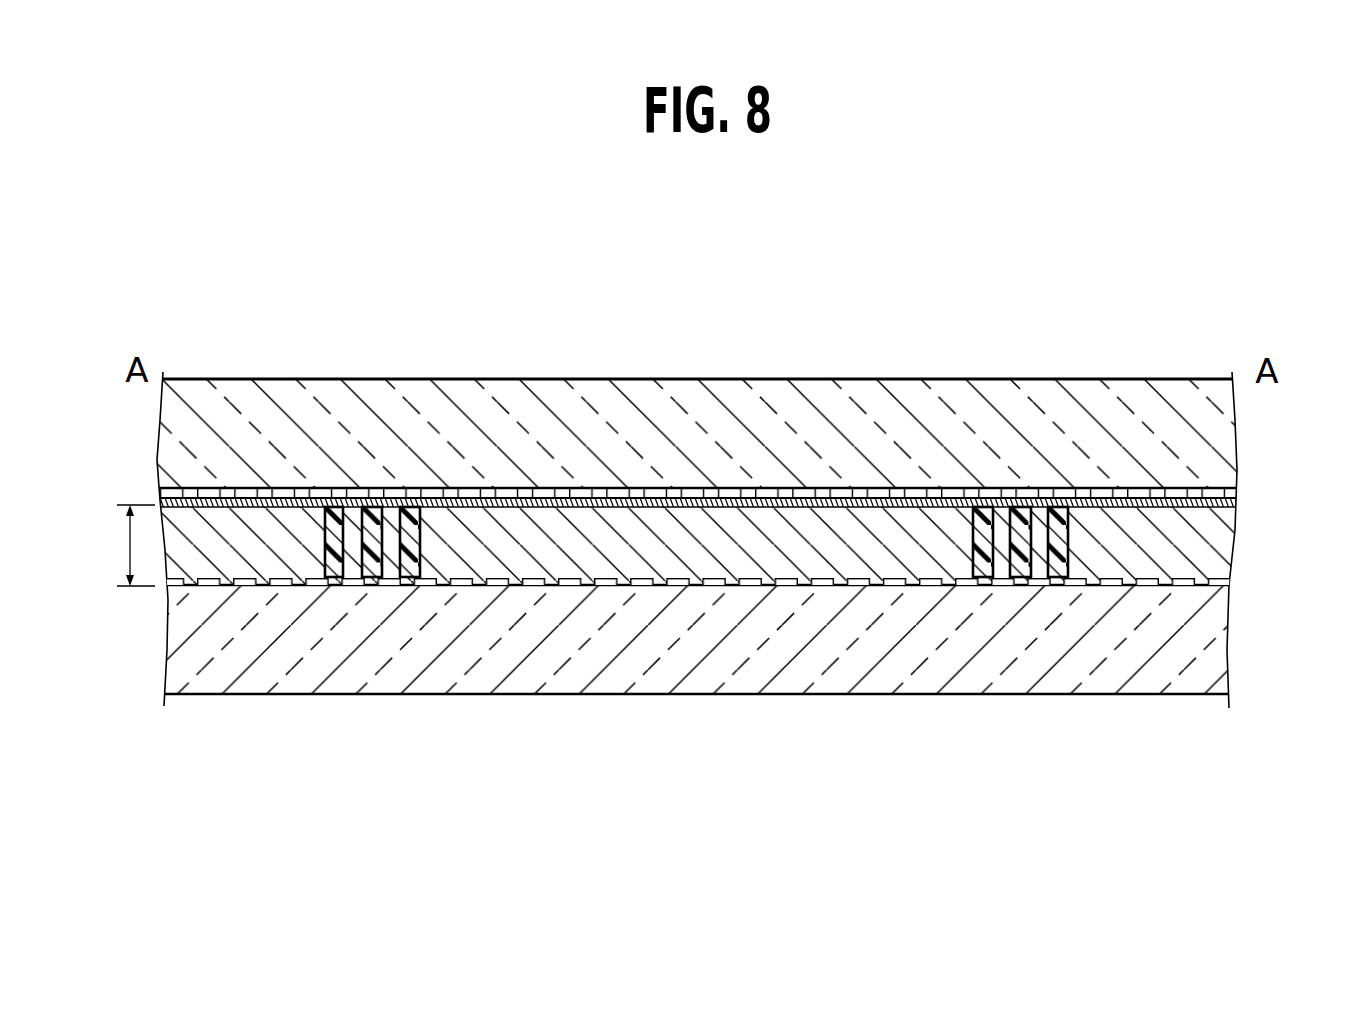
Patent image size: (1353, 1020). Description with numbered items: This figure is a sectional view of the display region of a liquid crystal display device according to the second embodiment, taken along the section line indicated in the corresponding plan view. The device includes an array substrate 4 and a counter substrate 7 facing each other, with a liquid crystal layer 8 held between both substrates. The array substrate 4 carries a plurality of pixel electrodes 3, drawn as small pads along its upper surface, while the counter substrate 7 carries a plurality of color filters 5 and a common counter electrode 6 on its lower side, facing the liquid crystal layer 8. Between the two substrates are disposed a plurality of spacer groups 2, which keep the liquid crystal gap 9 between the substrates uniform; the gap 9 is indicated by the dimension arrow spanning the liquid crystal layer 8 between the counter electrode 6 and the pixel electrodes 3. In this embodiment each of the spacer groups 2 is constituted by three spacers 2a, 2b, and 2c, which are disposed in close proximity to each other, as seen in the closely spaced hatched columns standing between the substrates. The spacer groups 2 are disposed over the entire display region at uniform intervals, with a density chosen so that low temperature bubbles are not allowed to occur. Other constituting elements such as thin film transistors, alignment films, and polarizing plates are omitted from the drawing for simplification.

The spacer group 2 is at (674, 420).
The spacer 2a is at (333, 507).
The spacer 2b is at (373, 507).
The spacer 2c is at (431, 447).
The pixel electrode 3 is at (965, 585).
The array substrate 4 is at (1220, 643).
The color filter 5 is at (1217, 490).
The common counter electrode 6 is at (1232, 502).
The counter substrate 7 is at (1228, 443).
The liquid crystal layer 8 is at (809, 518).
The liquid crystal gap 9 is at (125, 550).